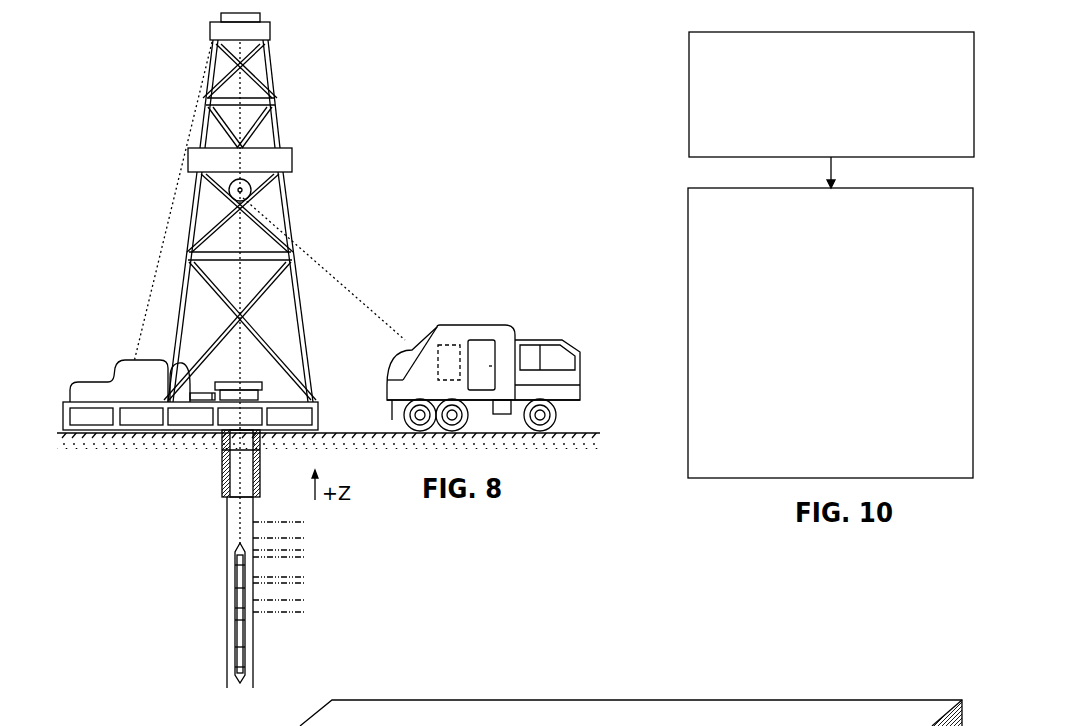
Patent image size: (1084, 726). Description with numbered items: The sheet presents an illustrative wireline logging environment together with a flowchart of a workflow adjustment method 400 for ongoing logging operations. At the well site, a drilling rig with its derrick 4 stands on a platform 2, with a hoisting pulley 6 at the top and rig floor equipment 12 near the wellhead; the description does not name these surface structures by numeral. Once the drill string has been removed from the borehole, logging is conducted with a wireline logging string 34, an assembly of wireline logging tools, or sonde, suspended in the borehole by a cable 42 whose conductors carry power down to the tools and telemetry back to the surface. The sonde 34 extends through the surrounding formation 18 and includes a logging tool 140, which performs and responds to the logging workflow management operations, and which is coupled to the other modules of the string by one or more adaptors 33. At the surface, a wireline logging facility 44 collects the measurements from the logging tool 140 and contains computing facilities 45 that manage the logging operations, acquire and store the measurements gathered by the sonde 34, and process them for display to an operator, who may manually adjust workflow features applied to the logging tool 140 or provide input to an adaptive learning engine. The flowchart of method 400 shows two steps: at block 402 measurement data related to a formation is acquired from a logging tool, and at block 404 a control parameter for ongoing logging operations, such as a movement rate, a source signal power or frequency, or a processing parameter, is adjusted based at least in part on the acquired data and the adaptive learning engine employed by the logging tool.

In FIG. 8, the drilling platform 2 is at (315, 410).
In FIG. 8, the derrick 4 is at (305, 371).
In FIG. 8, the hoist pulley 6 is at (251, 190).
In FIG. 8, the rig floor equipment 12 is at (253, 380).
In FIG. 8, the formation 18 is at (305, 522).
In FIG. 8, the adaptors 33 is at (242, 590).
In FIG. 8, the wireline logging string 34 is at (165, 552).
In FIG. 8, the cable 42 is at (301, 255).
In FIG. 8, the wireline logging facility 44 is at (508, 327).
In FIG. 8, the computing facilities 45 is at (441, 345).
In FIG. 8, the logging tool 140 is at (223, 595).
In FIG. 10, the workflow adjustment method 400 is at (632, 157).
In FIG. 10, the block 402 is at (688, 93).
In FIG. 10, the block 404 is at (688, 245).